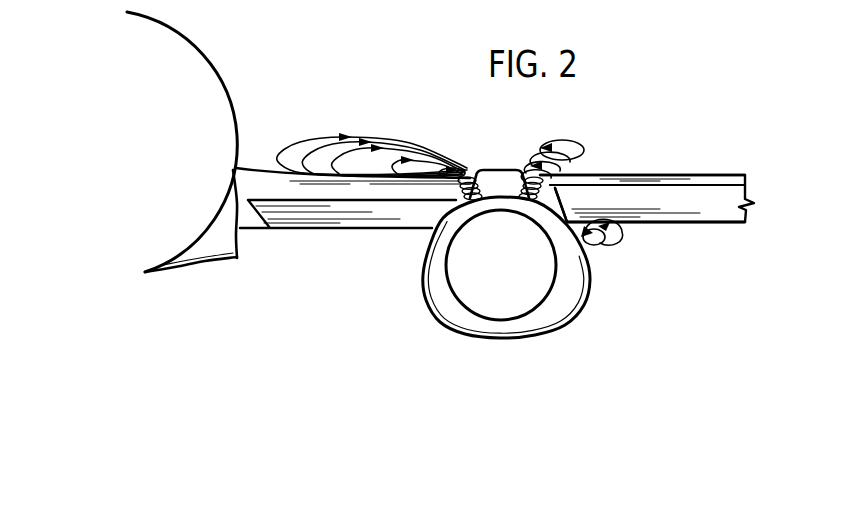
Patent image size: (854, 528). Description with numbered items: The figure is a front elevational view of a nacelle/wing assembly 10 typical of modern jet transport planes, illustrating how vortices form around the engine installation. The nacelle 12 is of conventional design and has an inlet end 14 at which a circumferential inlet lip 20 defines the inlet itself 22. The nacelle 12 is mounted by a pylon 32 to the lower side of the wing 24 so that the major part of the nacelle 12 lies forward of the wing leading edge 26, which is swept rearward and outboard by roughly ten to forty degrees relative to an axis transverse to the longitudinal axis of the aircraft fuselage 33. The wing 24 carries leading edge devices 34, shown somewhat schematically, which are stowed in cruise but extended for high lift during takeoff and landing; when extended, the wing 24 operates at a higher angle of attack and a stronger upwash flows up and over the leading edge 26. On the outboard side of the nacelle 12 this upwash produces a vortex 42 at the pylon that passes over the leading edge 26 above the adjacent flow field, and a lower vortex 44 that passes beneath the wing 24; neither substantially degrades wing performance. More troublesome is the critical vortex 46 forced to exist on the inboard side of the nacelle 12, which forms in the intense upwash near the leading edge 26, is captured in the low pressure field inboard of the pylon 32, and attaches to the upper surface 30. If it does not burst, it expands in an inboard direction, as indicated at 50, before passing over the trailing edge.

The nacelle/wing assembly 10 is at (661, 116).
The nacelle 12 is at (510, 267).
The inlet end 14 is at (432, 267).
The circumferential inlet lip 20 is at (432, 292).
The inlet 22 is at (462, 293).
The wing 24 is at (652, 171).
The leading edge 26 is at (664, 182).
The upper surface 30 is at (688, 175).
The pylon 32 is at (498, 170).
The aircraft fuselage 33 is at (222, 97).
The leading edge devices 34 is at (333, 217).
The vortex 42 is at (557, 148).
The lower vortex 44 is at (601, 250).
The critical vortex 46 is at (438, 162).
The inboard expansion of vortex 50 is at (321, 141).